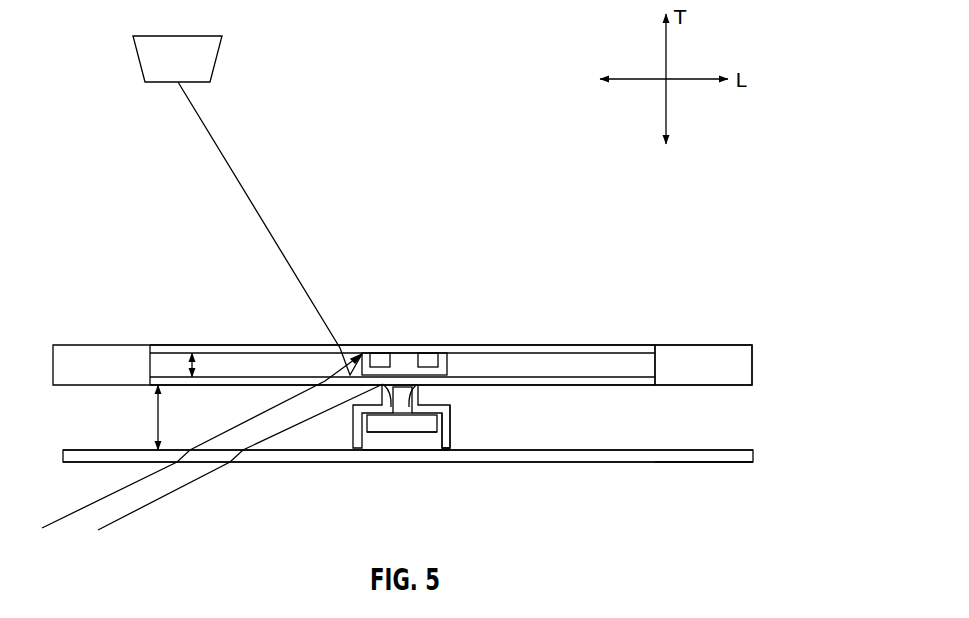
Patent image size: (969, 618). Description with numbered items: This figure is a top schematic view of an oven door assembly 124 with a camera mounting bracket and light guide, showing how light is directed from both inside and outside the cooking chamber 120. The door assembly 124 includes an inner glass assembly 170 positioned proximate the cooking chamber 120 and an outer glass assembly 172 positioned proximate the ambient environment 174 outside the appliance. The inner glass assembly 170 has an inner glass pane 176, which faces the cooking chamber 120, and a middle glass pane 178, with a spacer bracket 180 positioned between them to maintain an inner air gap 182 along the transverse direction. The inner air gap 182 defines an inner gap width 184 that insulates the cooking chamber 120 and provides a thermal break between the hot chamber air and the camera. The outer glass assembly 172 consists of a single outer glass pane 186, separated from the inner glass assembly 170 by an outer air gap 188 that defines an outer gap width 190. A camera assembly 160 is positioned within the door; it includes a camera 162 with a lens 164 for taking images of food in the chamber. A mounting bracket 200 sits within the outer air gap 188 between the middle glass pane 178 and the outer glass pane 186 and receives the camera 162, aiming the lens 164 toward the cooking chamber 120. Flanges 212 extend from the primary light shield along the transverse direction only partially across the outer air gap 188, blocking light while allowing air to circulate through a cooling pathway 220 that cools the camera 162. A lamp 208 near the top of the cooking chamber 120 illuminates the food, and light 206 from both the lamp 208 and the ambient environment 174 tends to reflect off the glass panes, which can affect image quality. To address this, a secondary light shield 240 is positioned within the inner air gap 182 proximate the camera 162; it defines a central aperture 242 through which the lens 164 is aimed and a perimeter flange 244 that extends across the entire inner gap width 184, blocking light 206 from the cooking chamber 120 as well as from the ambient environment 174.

The cooking chamber 120 is at (405, 209).
The door assembly 124 is at (785, 477).
The camera assembly 160 is at (382, 434).
The camera 162 is at (432, 424).
The lens 164 is at (402, 408).
The inner glass assembly 170 is at (770, 367).
The outer glass assembly 172 is at (757, 455).
The ambient environment 174 is at (585, 505).
The inner glass pane 176 is at (632, 345).
The middle glass pane 178 is at (600, 386).
The spacer bracket 180 is at (722, 367).
The inner air gap 182 is at (167, 352).
The inner gap width 184 is at (205, 357).
The outer glass pane 186 is at (657, 463).
The outer air gap 188 is at (96, 446).
The outer gap width 190 is at (158, 422).
The mounting bracket 200 is at (347, 433).
The light 206 is at (212, 135).
The lamp 208 is at (160, 70).
The flange 212 is at (452, 440).
The cooling pathway 220 is at (412, 451).
The secondary light shield 240 is at (372, 350).
The central aperture 242 is at (398, 357).
The perimeter flange 244 is at (450, 363).